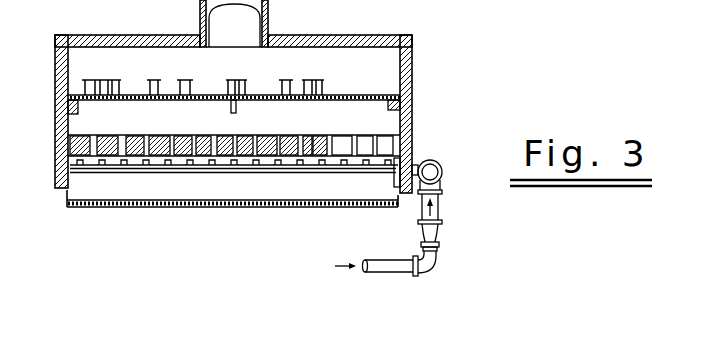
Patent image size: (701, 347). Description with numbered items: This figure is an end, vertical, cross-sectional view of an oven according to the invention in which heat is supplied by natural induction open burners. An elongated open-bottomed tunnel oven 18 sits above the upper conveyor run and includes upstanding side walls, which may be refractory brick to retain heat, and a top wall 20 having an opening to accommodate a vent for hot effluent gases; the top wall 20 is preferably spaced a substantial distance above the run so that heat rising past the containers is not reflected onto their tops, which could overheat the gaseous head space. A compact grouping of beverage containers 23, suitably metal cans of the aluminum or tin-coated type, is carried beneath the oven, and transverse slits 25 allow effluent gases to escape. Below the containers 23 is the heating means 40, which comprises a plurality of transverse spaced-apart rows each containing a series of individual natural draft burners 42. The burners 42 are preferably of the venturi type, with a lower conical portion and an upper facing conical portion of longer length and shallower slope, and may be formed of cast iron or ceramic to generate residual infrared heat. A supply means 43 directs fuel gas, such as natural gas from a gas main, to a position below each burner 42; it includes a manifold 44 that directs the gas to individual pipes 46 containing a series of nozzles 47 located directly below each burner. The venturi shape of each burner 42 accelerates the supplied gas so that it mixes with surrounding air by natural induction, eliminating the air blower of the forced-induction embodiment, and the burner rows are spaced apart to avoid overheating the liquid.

The tunnel oven 18 is at (421, 45).
The top wall 20 is at (343, 35).
The transverse slits 25 is at (253, 48).
The beverage containers 23 is at (320, 81).
The natural draft burners 42 is at (284, 134).
The nozzles 47 is at (243, 163).
The pipes 46 is at (330, 174).
The heating means 40 is at (146, 184).
The manifold 44 is at (436, 160).
The supply means 43 is at (441, 271).